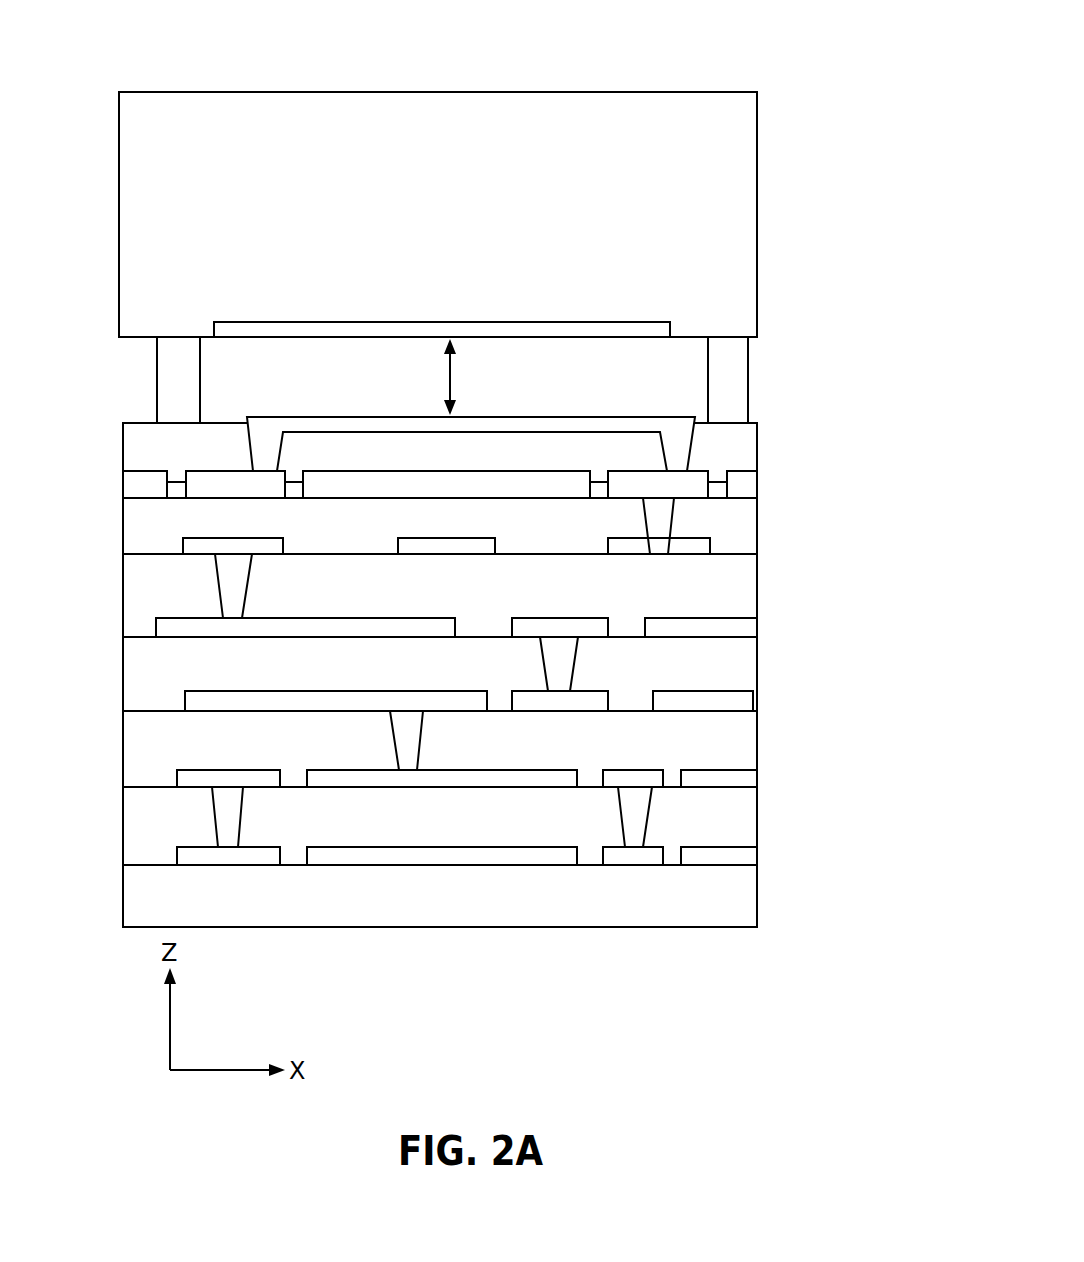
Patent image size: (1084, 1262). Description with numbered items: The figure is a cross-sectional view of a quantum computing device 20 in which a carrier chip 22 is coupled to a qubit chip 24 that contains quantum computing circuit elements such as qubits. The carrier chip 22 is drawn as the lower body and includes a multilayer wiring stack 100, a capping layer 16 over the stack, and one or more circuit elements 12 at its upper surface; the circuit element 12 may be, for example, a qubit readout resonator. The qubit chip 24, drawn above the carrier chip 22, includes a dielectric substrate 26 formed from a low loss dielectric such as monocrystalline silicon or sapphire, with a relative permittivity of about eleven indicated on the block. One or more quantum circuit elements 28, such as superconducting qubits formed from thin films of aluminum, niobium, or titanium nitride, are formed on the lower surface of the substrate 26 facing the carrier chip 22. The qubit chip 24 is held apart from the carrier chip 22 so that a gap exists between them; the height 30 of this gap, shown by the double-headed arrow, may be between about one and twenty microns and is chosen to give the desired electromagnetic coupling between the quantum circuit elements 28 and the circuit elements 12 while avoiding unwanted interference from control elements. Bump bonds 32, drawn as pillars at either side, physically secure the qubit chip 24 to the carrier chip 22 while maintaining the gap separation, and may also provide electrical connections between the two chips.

The quantum computing device 20 is at (838, 95).
The qubit chip 24 is at (779, 229).
The dielectric substrate 26 is at (743, 286).
The quantum circuit elements 28 is at (430, 328).
The height 30 is at (470, 377).
The bump bonds 32 is at (167, 385).
The circuit elements 12 is at (545, 417).
The capping layer 16 is at (748, 442).
The carrier chip 22 is at (912, 477).
The multilayer wiring stack 100 is at (838, 440).